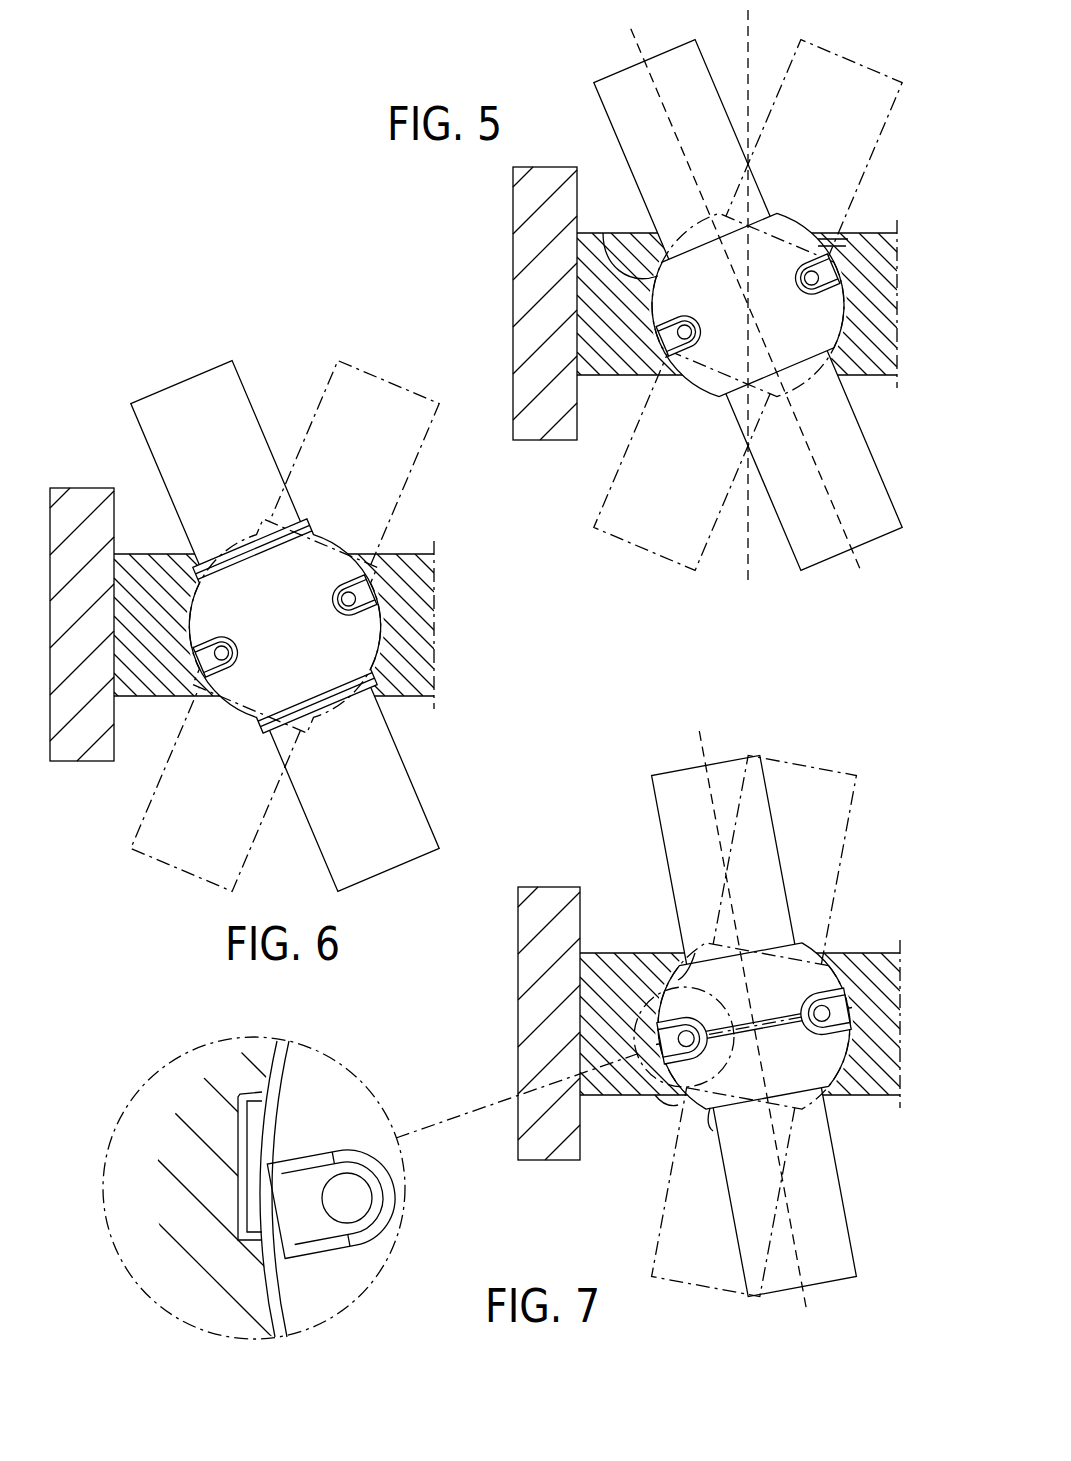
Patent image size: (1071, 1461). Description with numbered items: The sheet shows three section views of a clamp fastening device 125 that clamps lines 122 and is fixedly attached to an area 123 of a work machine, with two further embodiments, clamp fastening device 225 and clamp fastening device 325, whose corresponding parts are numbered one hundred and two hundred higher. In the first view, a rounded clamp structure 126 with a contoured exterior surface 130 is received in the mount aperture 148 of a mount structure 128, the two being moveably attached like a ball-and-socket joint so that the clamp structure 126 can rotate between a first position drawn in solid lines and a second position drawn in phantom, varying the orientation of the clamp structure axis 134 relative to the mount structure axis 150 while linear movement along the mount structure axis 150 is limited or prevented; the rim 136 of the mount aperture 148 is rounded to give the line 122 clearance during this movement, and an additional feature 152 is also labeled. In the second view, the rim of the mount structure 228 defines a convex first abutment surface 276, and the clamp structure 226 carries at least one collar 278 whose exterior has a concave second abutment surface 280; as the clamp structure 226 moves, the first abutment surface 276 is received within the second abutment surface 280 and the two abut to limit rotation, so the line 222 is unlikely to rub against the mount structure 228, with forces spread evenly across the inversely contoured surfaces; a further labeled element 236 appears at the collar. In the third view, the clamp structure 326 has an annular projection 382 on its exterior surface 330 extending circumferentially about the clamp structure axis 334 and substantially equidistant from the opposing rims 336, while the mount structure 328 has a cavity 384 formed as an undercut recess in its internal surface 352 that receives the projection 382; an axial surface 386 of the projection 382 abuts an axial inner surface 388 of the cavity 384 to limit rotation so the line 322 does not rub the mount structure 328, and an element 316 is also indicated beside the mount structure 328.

In FIG. 5, the lines 122 is at (626, 112).
In FIG. 5, the area 123 is at (538, 430).
In FIG. 5, the clamp fastening device 125 is at (875, 201).
In FIG. 5, the clamp structure 126 is at (770, 257).
In FIG. 5, the mount structure 128 is at (613, 338).
In FIG. 5, the contoured exterior surface 130 is at (611, 252).
In FIG. 5, the clamp structure axis 134 is at (630, 32).
In FIG. 5, the rim 136 is at (665, 253).
In FIG. 5, the mount aperture 148 is at (823, 322).
In FIG. 5, the mount structure axis 150 is at (749, 14).
In FIG. 5, the fastener 152 is at (656, 302).
In FIG. 6, the line 222 is at (160, 432).
In FIG. 6, the clamp fastening device 225 is at (414, 534).
In FIG. 6, the clamp structure 226 is at (303, 583).
In FIG. 6, the mount structure 228 is at (144, 592).
In FIG. 6, the insert face 236 is at (207, 562).
In FIG. 6, the first abutment surface 276 is at (209, 572).
In FIG. 6, the collar 278 is at (316, 513).
In FIG. 6, the second abutment surface 280 is at (190, 588).
In FIG. 7, the workpiece wall 316 is at (687, 960).
In FIG. 7, the line 322 is at (673, 797).
In FIG. 7, the clamp fastening device 325 is at (838, 935).
In FIG. 7, the clamp structure 326 is at (758, 981).
In FIG. 7, the mount structure 328 is at (619, 990).
In FIG. 7, the exterior surface 330 is at (842, 1098).
In FIG. 7, the clamp structure axis 334 is at (704, 739).
In FIG. 7, the opposing rims 336 is at (700, 953).
In FIG. 7, the internal surface 352 is at (685, 1092).
In FIG. 7, the projection 382 is at (858, 1001).
In FIG. 7, the cavity 384 is at (836, 1041).
In FIG. 7, the axial surface 386 is at (684, 1052).
In FIG. 7, the axial inner surface 388 is at (300, 1187).